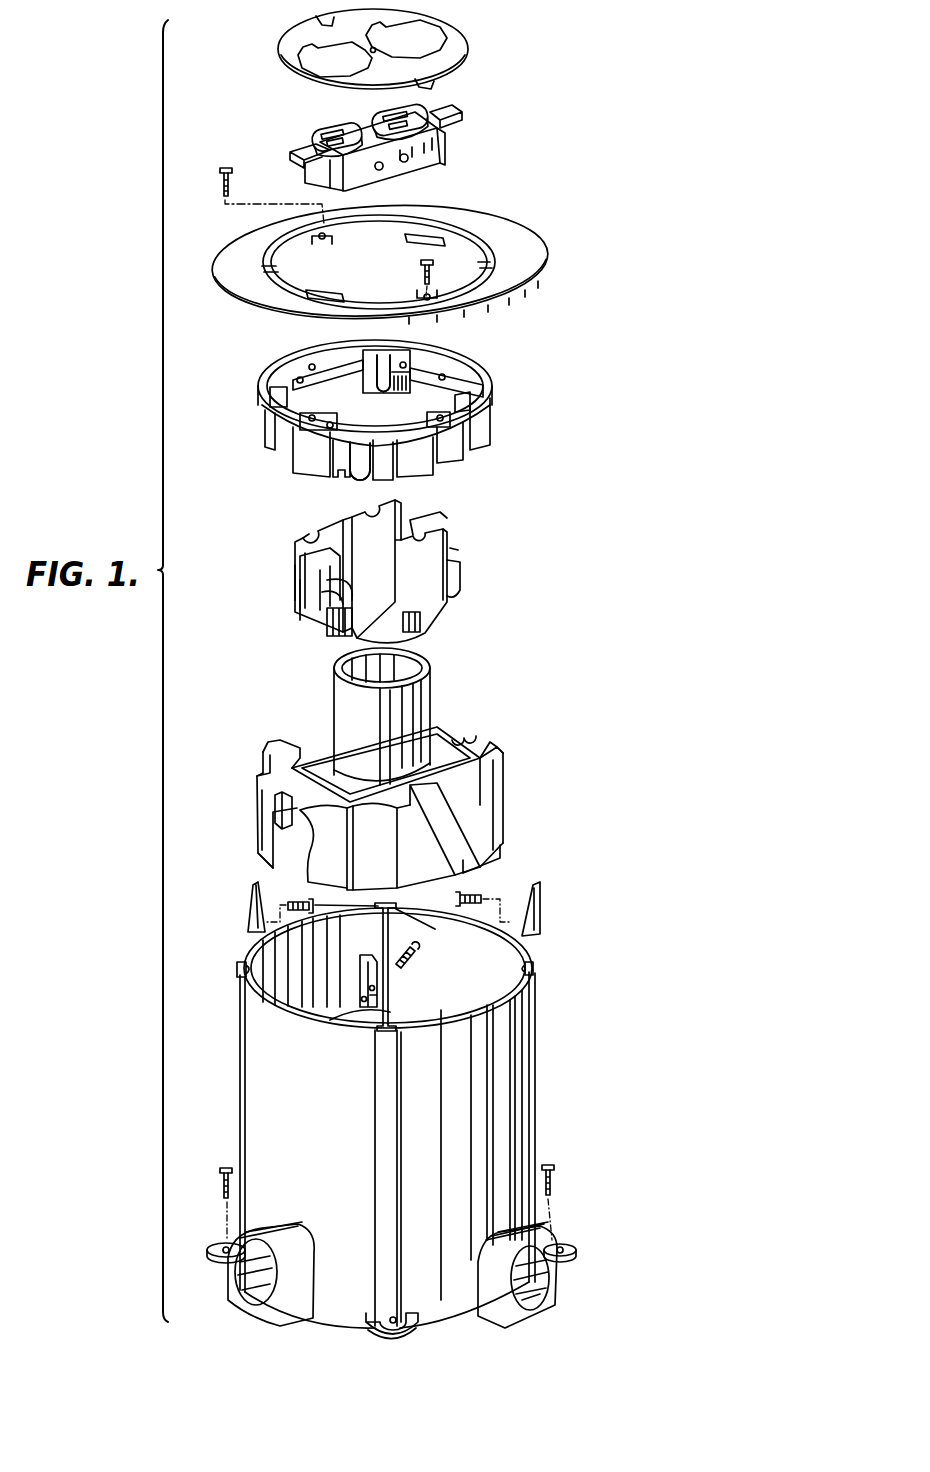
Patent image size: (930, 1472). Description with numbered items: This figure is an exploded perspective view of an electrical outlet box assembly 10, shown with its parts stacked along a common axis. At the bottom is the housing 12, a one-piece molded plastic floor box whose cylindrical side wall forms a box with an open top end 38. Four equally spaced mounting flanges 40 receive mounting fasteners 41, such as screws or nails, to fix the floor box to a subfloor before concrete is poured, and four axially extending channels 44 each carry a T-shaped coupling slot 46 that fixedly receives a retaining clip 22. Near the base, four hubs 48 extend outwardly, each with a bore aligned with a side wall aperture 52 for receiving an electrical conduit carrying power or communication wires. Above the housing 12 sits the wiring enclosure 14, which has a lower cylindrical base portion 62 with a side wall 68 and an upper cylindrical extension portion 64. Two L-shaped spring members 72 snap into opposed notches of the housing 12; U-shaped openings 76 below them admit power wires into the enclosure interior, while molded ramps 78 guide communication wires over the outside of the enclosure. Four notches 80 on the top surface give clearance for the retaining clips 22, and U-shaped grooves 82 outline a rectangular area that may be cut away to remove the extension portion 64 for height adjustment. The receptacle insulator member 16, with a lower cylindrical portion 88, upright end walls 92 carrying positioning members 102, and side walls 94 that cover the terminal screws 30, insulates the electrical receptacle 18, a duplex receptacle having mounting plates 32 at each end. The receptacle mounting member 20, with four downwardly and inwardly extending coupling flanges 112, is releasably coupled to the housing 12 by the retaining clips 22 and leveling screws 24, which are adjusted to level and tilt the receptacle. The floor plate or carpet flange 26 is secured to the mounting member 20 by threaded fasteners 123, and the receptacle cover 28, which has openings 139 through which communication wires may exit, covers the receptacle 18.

The electrical outlet box assembly 10 is at (606, 247).
The housing 12 is at (399, 1101).
The wiring enclosure 14 is at (390, 769).
The receptacle insulator member 16 is at (386, 576).
The electrical receptacle 18 is at (385, 145).
The receptacle mounting member 20 is at (404, 424).
The retaining clips 22 is at (250, 913).
The leveling screws 24 is at (468, 900).
The floor plate or carpet flange 26 is at (540, 218).
The receptacle cover 28 is at (394, 51).
The terminal screws 30 is at (407, 162).
The mounting plates 32 is at (297, 156).
The open top end 38 is at (474, 1008).
The mounting flanges 40 is at (212, 1243).
The mounting fasteners 41 is at (223, 1168).
The channels 44 is at (380, 900).
The coupling slots 46 is at (236, 960).
The hubs or sockets 48 is at (314, 1278).
The side wall aperture 52 is at (553, 1298).
The lower base portion 62 is at (257, 788).
The upper cylindrical extension portion 64 is at (333, 693).
The side wall 68 is at (263, 842).
The L-shaped cantilever spring members or catches 72 is at (283, 812).
The U-shaped openings 76 is at (279, 869).
The molded ramps 78 is at (290, 741).
The notches 80 is at (251, 755).
The U-shaped grooves 82 is at (445, 760).
The lower cylindrical portion 88 is at (324, 636).
The end walls 92 is at (450, 545).
The side walls 94 is at (303, 540).
The positioning member 102 is at (300, 616).
The coupling flanges 112 is at (362, 388).
The threaded fasteners 123 is at (234, 157).
The openings 139 is at (300, 29).